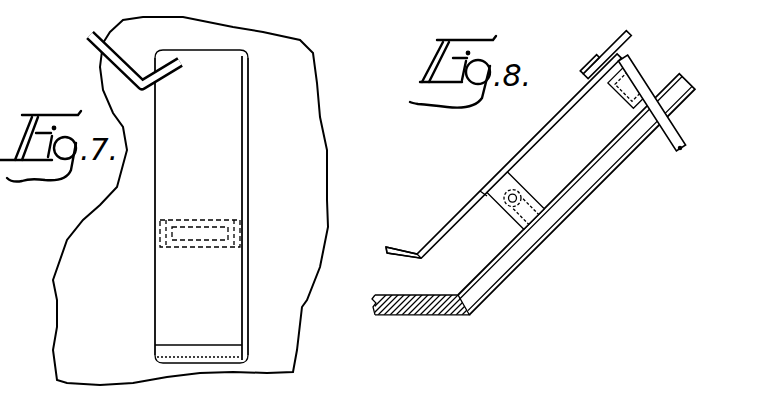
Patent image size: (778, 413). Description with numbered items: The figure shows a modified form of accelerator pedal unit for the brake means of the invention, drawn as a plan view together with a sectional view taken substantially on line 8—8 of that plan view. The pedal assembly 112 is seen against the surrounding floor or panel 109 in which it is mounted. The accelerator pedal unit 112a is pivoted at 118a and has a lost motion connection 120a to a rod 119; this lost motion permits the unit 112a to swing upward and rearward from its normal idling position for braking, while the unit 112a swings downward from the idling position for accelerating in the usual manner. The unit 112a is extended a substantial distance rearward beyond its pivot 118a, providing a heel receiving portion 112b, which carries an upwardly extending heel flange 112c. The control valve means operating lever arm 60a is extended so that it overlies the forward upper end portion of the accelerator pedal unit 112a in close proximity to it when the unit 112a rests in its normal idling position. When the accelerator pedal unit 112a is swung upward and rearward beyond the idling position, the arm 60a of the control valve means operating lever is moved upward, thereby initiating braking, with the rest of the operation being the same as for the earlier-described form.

In FIG. 7, the section line 8— 8 is at (227, 15).
In FIG. 7, the control valve means operating lever arm 60a is at (110, 63).
In FIG. 8, the control valve means operating lever arm 60a is at (631, 35).
In FIG. 7, the wall panel 109 is at (302, 78).
In FIG. 8, the wall panel 109 is at (596, 185).
In FIG. 7, the bracket 112 is at (247, 411).
In FIG. 7, the accelerator pedal unit 112a is at (242, 164).
In FIG. 8, the accelerator pedal unit 112a is at (556, 115).
In FIG. 7, the heel receiving portion 112b is at (157, 290).
In FIG. 8, the heel receiving portion 112b is at (475, 200).
In FIG. 7, the heel flange 112c is at (163, 352).
In FIG. 8, the heel flange 112c is at (388, 250).
In FIG. 7, the pivot 118a is at (242, 234).
In FIG. 8, the pivot 118a is at (520, 196).
In FIG. 8, the rod 119 is at (678, 130).
In FIG. 8, the lost motion connection 120a is at (634, 74).